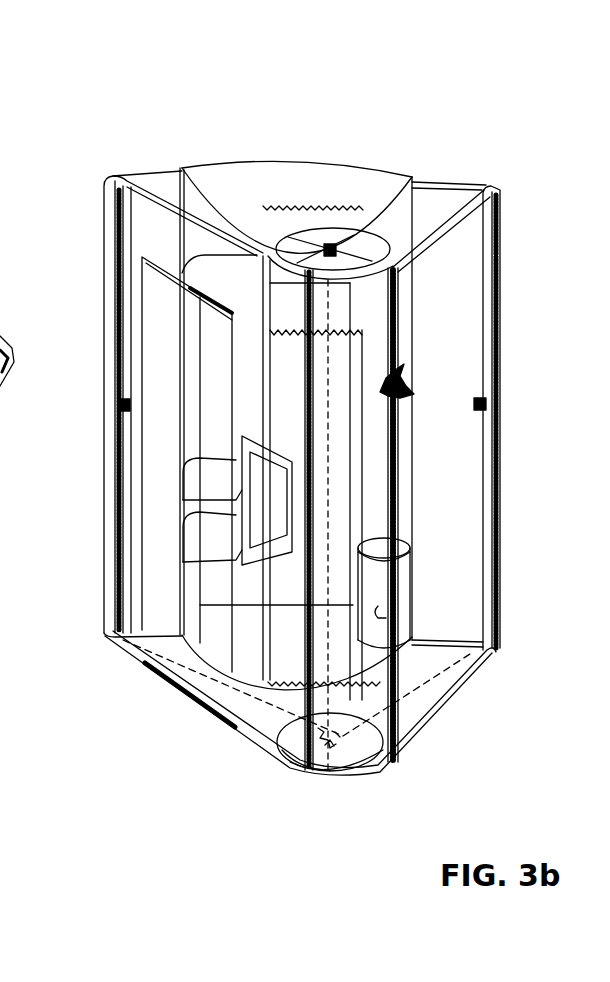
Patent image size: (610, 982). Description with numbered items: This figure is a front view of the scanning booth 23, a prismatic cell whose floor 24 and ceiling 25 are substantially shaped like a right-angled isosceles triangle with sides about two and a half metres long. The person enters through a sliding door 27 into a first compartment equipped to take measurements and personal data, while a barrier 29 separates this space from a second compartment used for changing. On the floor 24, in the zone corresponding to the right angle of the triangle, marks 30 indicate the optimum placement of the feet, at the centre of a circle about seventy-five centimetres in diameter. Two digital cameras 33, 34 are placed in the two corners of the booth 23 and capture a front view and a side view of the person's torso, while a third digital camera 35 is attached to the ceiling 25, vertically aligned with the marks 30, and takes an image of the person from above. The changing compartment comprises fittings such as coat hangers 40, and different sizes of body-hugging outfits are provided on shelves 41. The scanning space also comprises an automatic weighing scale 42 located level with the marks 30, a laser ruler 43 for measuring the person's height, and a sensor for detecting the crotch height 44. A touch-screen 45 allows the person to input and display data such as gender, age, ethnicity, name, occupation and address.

The booth 23 is at (302, 453).
The floor 24 is at (430, 695).
The ceiling 25 is at (432, 205).
The sliding door 27 is at (173, 673).
The barrier 29 is at (354, 337).
The marks 30 is at (363, 766).
The digital camera 33 is at (118, 406).
The digital camera 34 is at (486, 405).
The third digital camera 35 is at (330, 244).
The coat hangers 40 is at (415, 393).
The shelves 41 is at (190, 478).
The automatic weighing scale 42 is at (293, 740).
The laser ruler 43 is at (328, 437).
The sensor for detecting the crotch height 44 is at (385, 612).
The touch-screen 45 is at (262, 512).